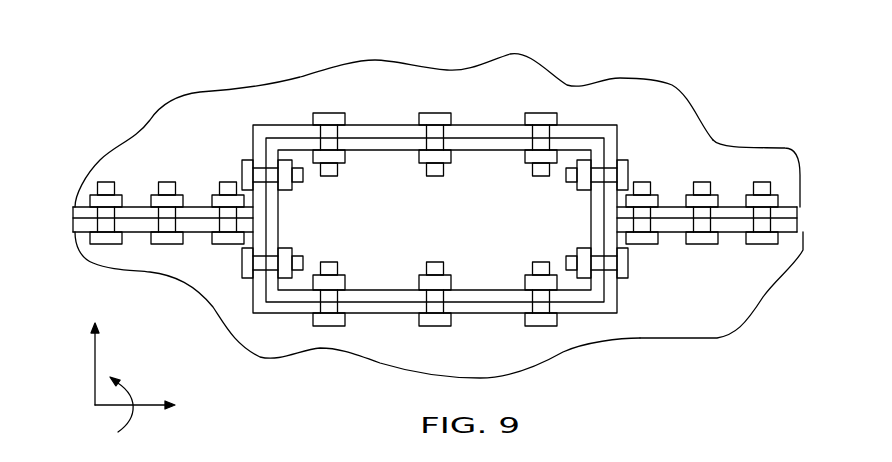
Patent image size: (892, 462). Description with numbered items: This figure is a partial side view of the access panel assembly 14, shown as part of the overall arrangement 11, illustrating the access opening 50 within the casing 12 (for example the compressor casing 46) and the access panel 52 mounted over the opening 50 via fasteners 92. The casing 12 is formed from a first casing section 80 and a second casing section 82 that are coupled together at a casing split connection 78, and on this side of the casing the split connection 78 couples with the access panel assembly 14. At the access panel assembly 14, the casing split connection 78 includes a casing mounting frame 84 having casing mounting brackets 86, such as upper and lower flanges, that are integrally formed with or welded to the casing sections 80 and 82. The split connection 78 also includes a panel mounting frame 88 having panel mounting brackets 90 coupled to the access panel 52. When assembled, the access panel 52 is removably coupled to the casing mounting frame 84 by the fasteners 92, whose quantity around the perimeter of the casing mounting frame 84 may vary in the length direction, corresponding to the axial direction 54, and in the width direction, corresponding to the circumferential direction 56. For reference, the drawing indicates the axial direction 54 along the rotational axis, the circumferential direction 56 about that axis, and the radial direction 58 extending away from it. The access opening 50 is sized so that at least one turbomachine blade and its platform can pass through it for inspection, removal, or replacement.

The seal system 11 is at (158, 72).
The casing 12 is at (697, 104).
The access panel assembly 14 is at (242, 312).
The casing 46 is at (670, 84).
The access opening 50 is at (592, 308).
The access panel 52 is at (444, 234).
The axial direction 54 is at (112, 406).
The circumferential direction 56 is at (133, 385).
The radial direction 58 is at (93, 369).
The casing split connection 78 is at (72, 210).
The first casing section 80 is at (713, 140).
The second casing section 82 is at (740, 312).
The casing mounting frame 84 is at (488, 309).
The casing mounting brackets 86 is at (137, 207).
The panel mounting frame 88 is at (398, 297).
The panel mounting brackets 90 is at (278, 212).
The fasteners 92 is at (166, 182).